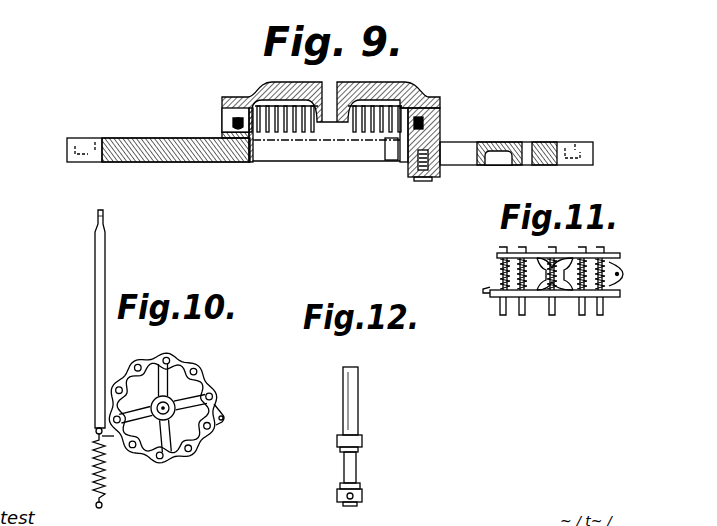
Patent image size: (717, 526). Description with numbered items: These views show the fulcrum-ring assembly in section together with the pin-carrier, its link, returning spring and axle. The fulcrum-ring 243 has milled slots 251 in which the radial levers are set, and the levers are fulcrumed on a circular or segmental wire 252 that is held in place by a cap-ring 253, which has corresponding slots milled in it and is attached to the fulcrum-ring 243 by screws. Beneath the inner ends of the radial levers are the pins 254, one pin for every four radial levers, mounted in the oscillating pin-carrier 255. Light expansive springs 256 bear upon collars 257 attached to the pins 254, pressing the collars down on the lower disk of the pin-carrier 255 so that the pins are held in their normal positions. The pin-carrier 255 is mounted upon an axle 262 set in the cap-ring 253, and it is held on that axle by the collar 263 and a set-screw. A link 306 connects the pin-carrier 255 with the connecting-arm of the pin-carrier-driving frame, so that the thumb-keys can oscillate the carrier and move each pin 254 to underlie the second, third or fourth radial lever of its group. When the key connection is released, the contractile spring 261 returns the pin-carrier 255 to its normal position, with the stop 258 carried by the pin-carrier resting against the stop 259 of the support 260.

In FIG. 9, the fulcrum-ring 243 is at (440, 137).
In FIG. 9, the milled slots 251 is at (228, 120).
In FIG. 9, the circular or segmental wire 252 is at (391, 146).
In FIG. 9, the cap-ring 253 is at (280, 88).
In FIG. 10, the pins 254 is at (170, 358).
In FIG. 11, the pins 254 is at (522, 250).
In FIG. 10, the pin-carrier 255 is at (208, 384).
In FIG. 11, the pin-carrier 255 is at (570, 292).
In FIG. 11, the expansive springs 256 is at (503, 270).
In FIG. 11, the collars 257 is at (622, 284).
In FIG. 10, the stop 258 is at (228, 418).
In FIG. 11, the stop 258 is at (618, 277).
In FIG. 9, the stop 259 is at (390, 141).
In FIG. 9, the support 260 is at (420, 182).
In FIG. 10, the contractile spring 261 is at (93, 468).
In FIG. 12, the axle 262 is at (351, 416).
In FIG. 12, the collar 263 is at (362, 495).
In FIG. 10, the link 306 is at (94, 336).
In FIG. 11, the link 306 is at (487, 292).